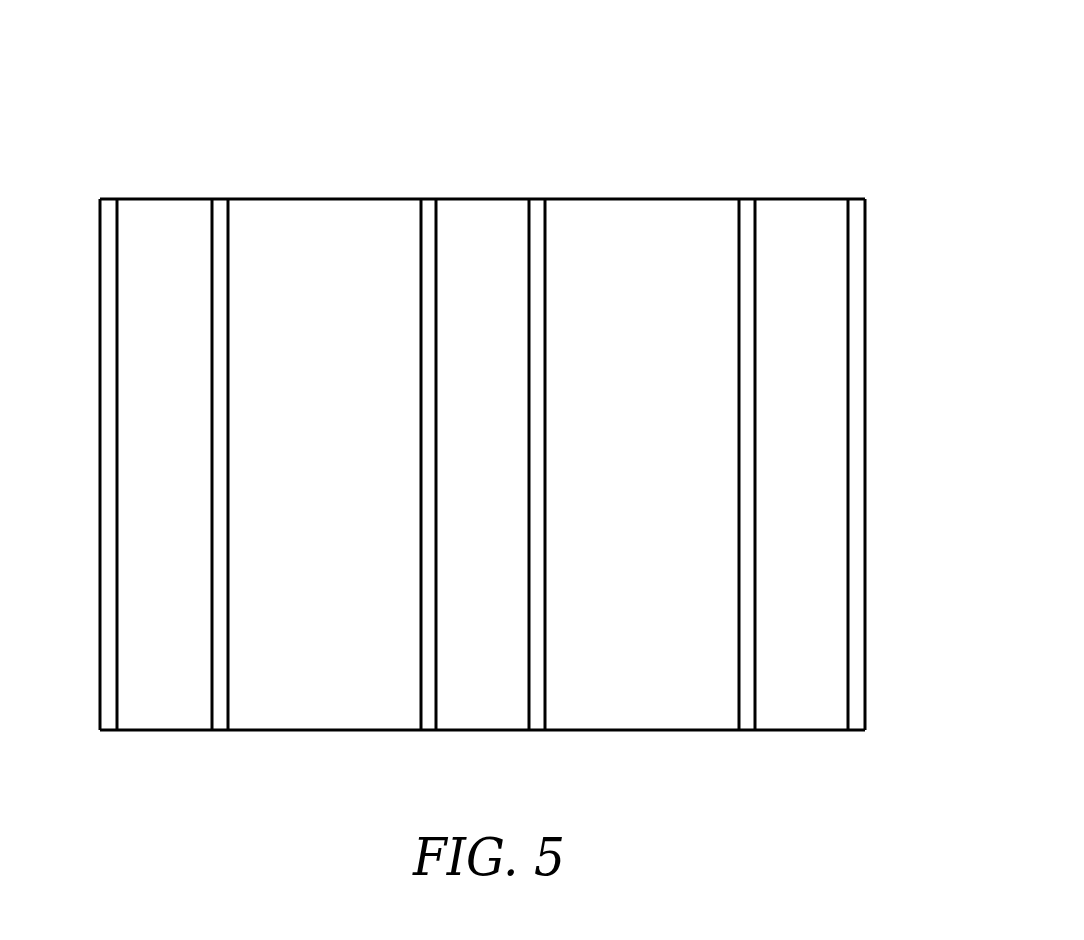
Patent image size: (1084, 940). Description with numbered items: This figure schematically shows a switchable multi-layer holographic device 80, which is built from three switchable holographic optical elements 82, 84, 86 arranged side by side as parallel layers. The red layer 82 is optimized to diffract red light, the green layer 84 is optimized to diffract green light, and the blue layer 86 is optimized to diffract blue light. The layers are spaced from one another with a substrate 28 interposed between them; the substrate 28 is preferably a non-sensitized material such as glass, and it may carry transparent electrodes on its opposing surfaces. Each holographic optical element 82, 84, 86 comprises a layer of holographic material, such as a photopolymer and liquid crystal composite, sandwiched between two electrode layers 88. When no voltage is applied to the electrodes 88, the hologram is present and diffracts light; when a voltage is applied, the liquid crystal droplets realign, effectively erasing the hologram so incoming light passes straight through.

The switchable holographic device 80 is at (684, 93).
The red layer 82 is at (147, 235).
The substrate 28 is at (297, 245).
The green layer 84 is at (476, 230).
The blue layer 86 is at (787, 232).
The electrode layers 88 is at (222, 693).